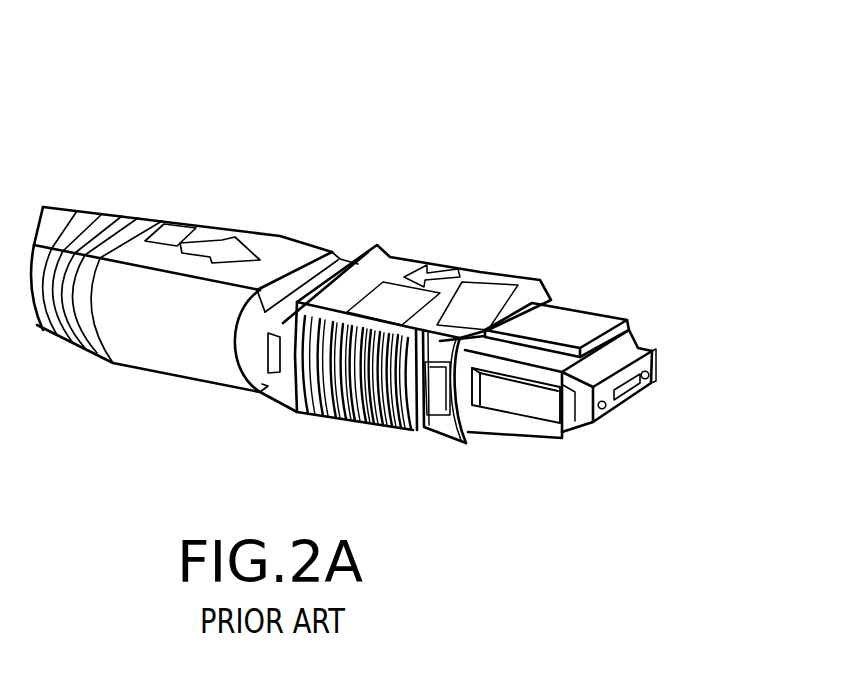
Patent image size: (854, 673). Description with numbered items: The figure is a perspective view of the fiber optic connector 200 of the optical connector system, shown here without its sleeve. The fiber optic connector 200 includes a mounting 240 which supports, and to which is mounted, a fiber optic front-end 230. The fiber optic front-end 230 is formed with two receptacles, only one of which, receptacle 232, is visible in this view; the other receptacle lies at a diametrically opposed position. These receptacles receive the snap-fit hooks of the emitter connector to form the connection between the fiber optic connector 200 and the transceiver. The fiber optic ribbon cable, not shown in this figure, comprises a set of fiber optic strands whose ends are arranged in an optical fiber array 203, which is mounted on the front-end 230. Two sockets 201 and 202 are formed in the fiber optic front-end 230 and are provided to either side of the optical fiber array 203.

The fiber optic connector 200 is at (437, 167).
The mounting 240 is at (462, 270).
The fiber optic front-end 230 is at (597, 312).
The receptacle 232 is at (497, 392).
The socket 202 is at (582, 427).
The socket 201 is at (651, 375).
The optical fiber array 203 is at (627, 390).